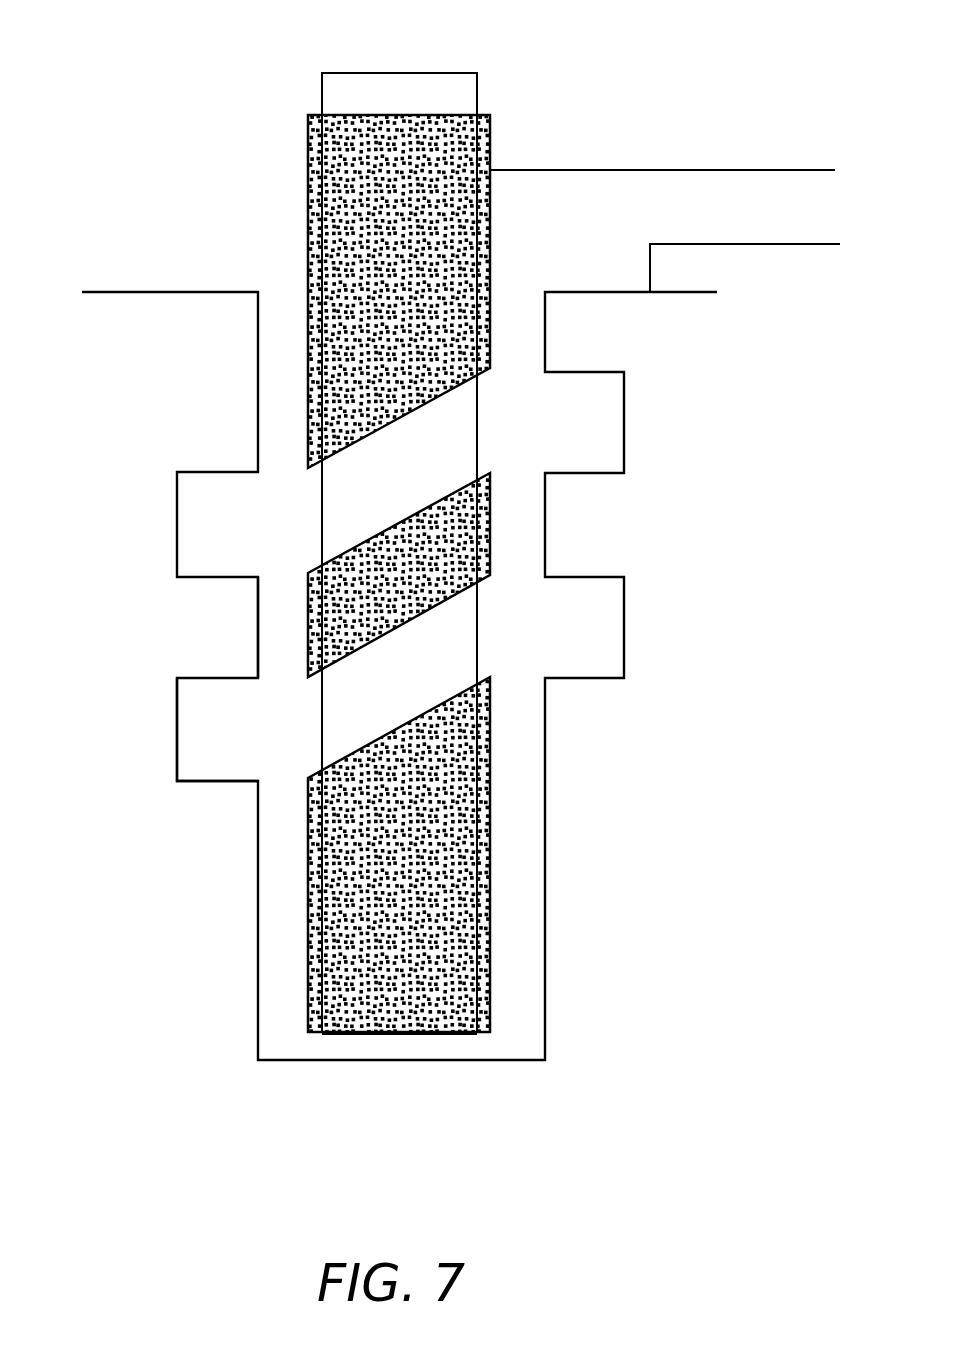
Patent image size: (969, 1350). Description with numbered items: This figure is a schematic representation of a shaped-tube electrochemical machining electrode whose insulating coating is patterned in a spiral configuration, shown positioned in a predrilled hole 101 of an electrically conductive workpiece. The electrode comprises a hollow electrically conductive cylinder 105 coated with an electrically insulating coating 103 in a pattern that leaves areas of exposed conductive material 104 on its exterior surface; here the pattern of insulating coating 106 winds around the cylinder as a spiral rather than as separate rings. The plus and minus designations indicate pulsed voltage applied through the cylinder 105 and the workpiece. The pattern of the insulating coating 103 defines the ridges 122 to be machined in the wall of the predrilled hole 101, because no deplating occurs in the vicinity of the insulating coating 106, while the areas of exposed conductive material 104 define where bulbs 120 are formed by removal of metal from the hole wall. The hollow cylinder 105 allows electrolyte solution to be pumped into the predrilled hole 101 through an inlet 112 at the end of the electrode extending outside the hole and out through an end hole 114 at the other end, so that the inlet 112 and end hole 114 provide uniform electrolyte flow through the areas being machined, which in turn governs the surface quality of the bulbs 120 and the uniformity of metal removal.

The predrilled hole 101 is at (283, 298).
The electrically insulating coating 103 is at (490, 149).
The areas of exposed conductive material 104 is at (443, 433).
The cylinder 105 is at (326, 98).
The rings of insulating coating 106 is at (506, 524).
The inlet 112 is at (440, 73).
The end hole 114 is at (413, 1034).
The bulbs 120 is at (163, 747).
The ridges 122 is at (240, 628).